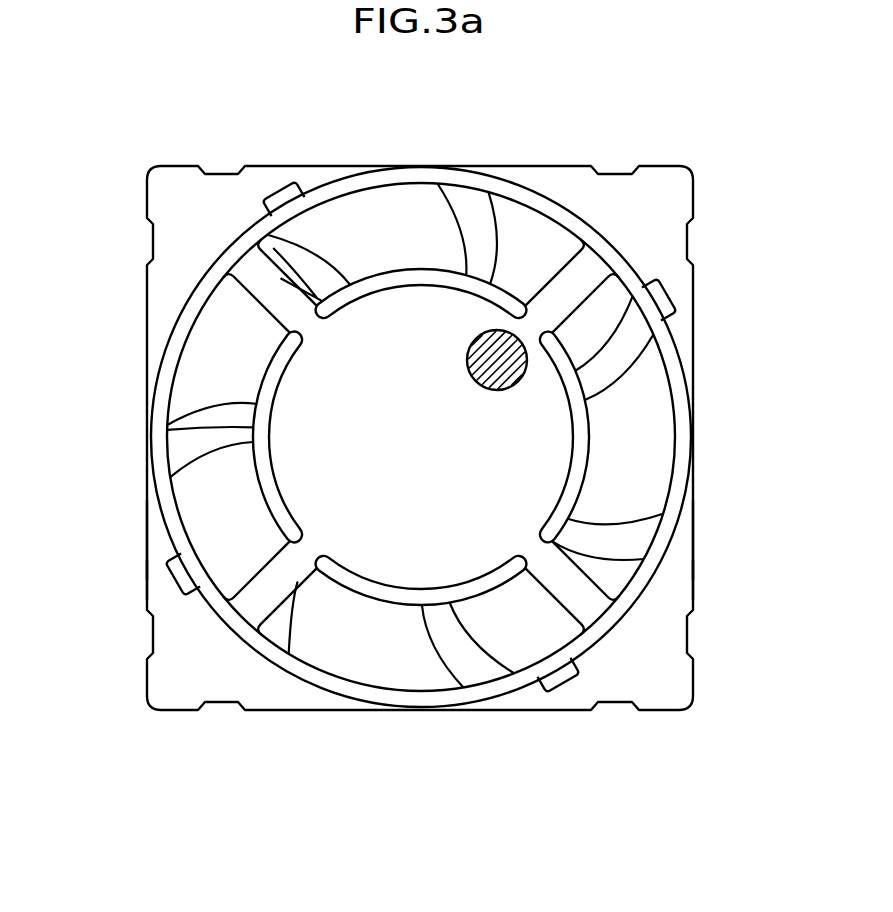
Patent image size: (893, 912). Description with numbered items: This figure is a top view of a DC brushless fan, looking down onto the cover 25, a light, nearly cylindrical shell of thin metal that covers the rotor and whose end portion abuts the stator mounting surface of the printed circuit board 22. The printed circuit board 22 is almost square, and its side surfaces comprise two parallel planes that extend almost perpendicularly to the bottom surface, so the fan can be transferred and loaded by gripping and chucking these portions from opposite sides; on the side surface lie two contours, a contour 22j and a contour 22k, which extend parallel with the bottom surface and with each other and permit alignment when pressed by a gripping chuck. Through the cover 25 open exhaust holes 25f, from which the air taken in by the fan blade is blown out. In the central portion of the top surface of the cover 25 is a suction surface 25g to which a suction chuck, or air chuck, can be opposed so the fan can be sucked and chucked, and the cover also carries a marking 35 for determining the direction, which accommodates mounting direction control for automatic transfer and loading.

The printed circuit board 22 is at (313, 698).
The contour 22j is at (146, 544).
The contour 22k is at (419, 574).
The cover 25 is at (233, 258).
The exhaust hole 25f is at (413, 197).
The suction surface 25g is at (472, 533).
The marking 35 is at (497, 355).